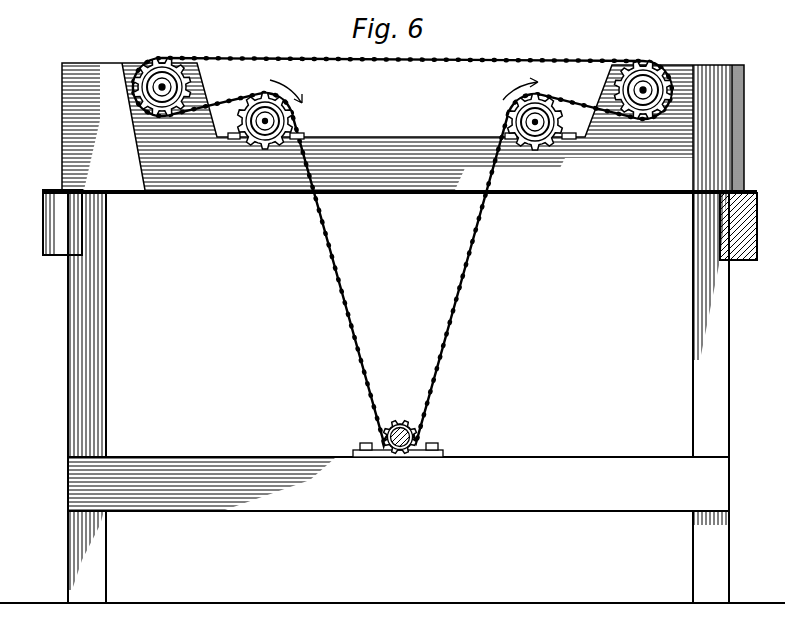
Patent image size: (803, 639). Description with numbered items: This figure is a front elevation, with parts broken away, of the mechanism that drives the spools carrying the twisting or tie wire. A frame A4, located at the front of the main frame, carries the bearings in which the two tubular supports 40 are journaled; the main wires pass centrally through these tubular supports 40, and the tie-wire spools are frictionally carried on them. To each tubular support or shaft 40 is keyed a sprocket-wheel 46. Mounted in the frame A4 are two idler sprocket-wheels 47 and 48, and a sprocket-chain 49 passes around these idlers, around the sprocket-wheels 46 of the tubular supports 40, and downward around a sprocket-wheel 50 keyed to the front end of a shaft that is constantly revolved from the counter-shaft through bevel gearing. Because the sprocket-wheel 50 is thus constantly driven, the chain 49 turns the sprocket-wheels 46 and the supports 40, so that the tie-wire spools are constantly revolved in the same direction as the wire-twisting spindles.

The tubular support 40 is at (286, 121).
The sprocket-wheel 46 is at (251, 93).
The idler sprocket-wheel 47 is at (200, 80).
The idler sprocket-wheel 48 is at (663, 61).
The sprocket-chain 49 is at (458, 294).
The sprocket-wheel 50 is at (404, 422).
The frame A4 is at (413, 152).